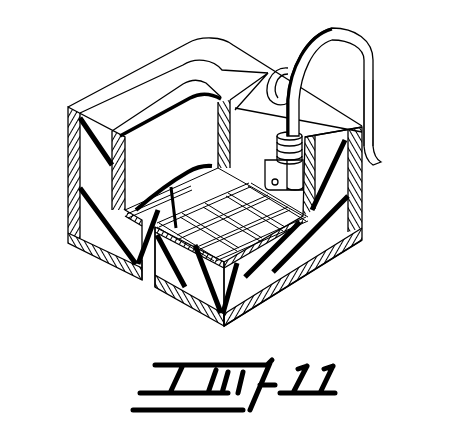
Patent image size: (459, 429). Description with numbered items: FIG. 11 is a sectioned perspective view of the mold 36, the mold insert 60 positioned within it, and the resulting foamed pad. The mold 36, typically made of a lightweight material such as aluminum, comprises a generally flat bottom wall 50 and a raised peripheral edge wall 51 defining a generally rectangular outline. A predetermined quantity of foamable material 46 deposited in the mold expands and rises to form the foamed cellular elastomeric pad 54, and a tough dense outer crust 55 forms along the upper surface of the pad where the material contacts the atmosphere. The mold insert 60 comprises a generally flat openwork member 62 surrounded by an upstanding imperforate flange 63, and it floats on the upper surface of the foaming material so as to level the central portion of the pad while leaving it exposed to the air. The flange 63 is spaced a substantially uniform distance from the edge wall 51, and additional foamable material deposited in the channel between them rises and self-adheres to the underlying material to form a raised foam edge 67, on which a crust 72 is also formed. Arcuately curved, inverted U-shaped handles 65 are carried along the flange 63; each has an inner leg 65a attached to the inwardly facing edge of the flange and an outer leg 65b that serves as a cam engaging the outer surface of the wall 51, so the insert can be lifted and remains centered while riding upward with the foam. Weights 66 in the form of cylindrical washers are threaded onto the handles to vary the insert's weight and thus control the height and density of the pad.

The mold 36 is at (90, 261).
The foamable material 46 is at (123, 263).
The bottom wall 50 is at (318, 266).
The peripheral edge wall 51 is at (82, 188).
The foamed cellular elastomeric pad 54 is at (353, 224).
The outer crust 55 is at (235, 316).
The mold insert 60 is at (127, 94).
The openwork member 62 is at (196, 306).
The flange 63 is at (212, 110).
The handle 65 is at (350, 26).
The inner leg 65a is at (278, 70).
The outer leg 65b is at (367, 90).
The weight 66 is at (316, 82).
The raised foam edge 67 is at (90, 152).
The crust 72 is at (99, 117).